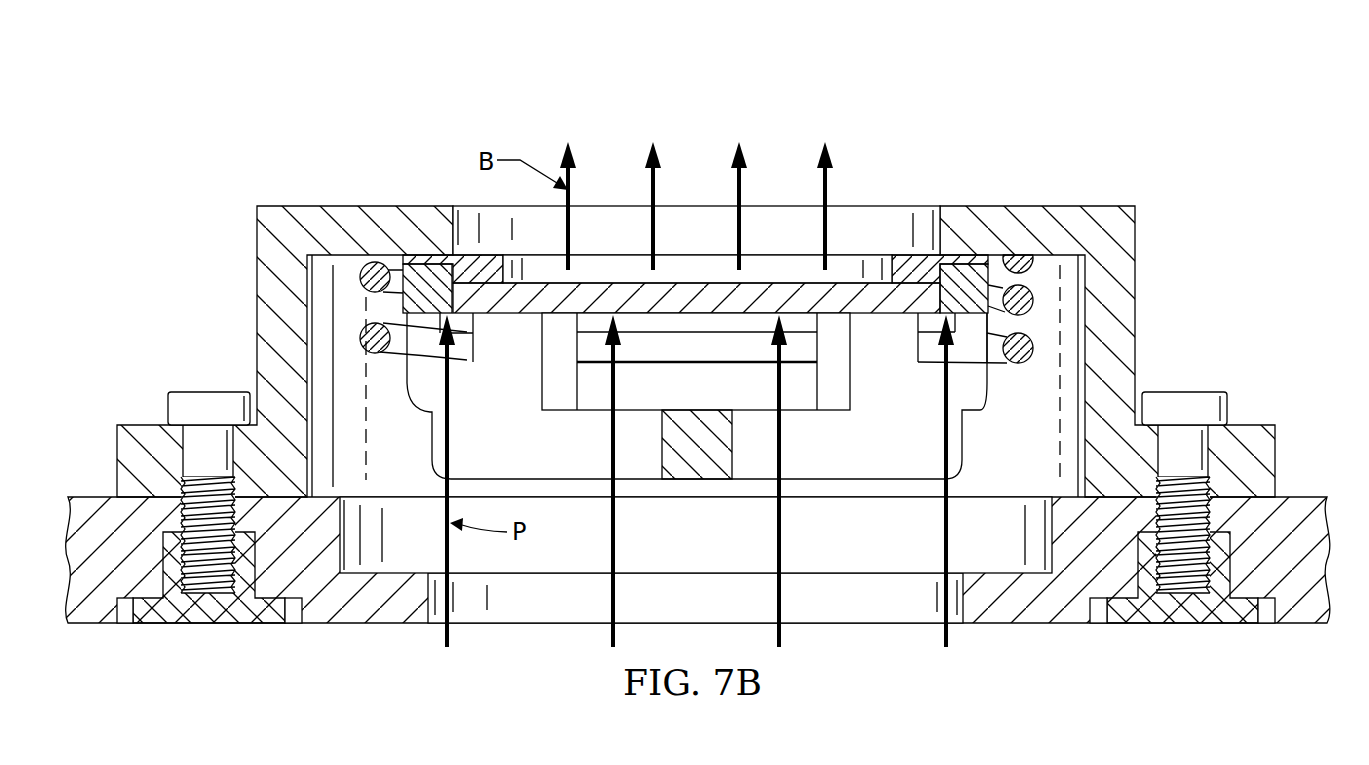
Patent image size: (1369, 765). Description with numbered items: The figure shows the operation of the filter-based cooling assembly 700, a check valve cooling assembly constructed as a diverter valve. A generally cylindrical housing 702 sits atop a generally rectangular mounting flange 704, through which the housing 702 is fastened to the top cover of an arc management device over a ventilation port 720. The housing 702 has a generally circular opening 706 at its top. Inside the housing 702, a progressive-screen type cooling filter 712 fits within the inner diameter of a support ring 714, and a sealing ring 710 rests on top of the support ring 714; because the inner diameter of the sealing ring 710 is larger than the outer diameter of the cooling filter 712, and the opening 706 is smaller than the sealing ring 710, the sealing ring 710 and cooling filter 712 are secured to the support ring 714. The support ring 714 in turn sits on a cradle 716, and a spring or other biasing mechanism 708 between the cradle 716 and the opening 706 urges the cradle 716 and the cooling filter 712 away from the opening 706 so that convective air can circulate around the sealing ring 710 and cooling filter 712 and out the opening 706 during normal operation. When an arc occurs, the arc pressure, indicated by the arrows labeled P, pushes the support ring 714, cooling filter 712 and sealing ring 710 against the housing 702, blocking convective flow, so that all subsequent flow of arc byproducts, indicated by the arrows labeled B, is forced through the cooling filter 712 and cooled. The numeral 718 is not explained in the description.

The filter-based cooling assembly 700 is at (333, 130).
The housing 702 is at (1135, 253).
The mounting flange 704 is at (1278, 470).
The opening 706 is at (708, 216).
The biasing mechanism 708 is at (1028, 316).
The sealing ring 710 is at (900, 262).
The cooling filter 712 is at (755, 290).
The support ring 714 is at (972, 272).
The cradle 716 is at (410, 390).
The clamp block 718 is at (465, 374).
The ventilation port 720 is at (984, 512).